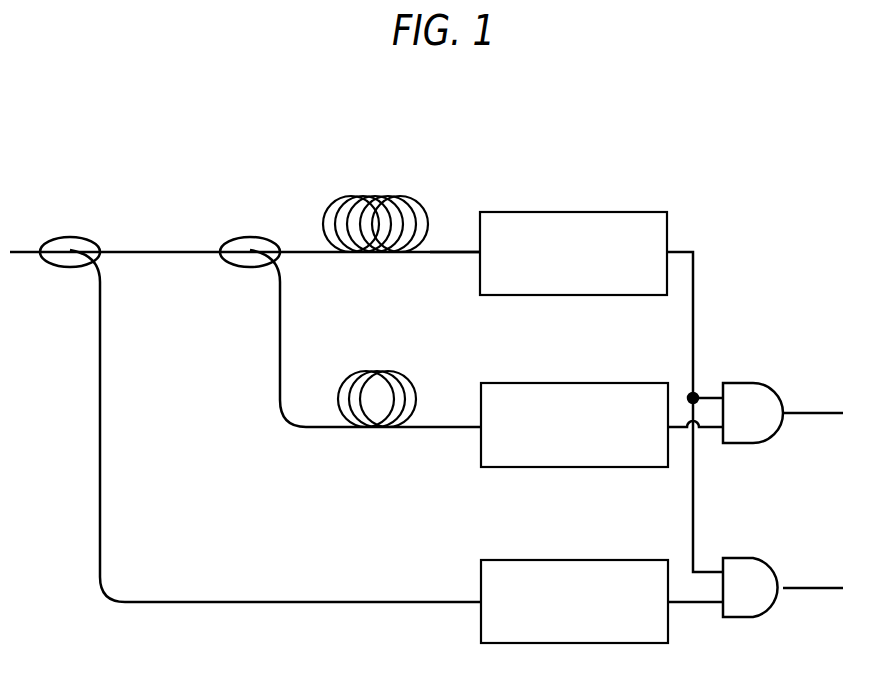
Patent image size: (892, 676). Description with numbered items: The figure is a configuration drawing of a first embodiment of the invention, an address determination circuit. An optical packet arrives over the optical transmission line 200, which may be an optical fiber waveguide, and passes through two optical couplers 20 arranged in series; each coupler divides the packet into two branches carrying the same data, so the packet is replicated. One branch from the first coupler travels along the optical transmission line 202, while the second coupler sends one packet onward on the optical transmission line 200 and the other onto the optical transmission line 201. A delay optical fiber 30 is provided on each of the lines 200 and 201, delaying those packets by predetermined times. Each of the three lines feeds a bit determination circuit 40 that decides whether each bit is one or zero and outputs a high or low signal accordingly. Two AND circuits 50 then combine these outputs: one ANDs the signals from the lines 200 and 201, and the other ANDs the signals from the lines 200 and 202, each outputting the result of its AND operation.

The optical coupler 20 is at (160, 256).
The delay optical fiber 30 is at (375, 269).
The bit determination circuit 40 is at (574, 405).
The AND circuit 50 is at (783, 475).
The optical transmission line 200 is at (460, 250).
The optical transmission line 201 is at (428, 430).
The optical transmission line 202 is at (163, 600).